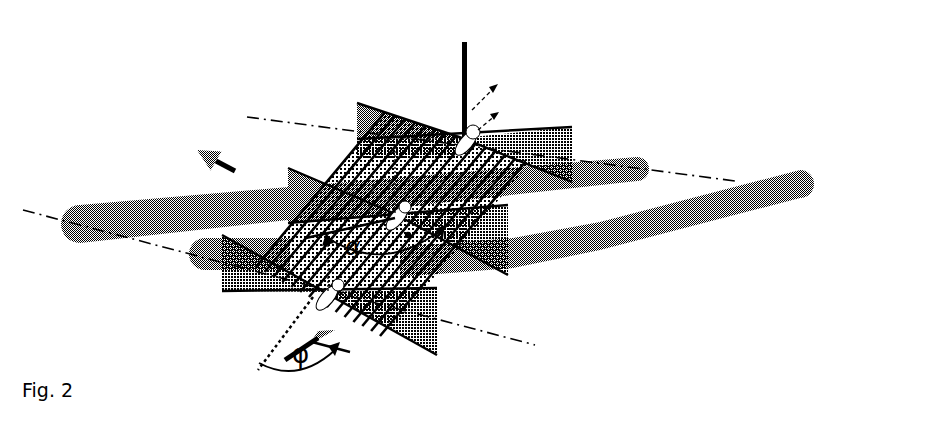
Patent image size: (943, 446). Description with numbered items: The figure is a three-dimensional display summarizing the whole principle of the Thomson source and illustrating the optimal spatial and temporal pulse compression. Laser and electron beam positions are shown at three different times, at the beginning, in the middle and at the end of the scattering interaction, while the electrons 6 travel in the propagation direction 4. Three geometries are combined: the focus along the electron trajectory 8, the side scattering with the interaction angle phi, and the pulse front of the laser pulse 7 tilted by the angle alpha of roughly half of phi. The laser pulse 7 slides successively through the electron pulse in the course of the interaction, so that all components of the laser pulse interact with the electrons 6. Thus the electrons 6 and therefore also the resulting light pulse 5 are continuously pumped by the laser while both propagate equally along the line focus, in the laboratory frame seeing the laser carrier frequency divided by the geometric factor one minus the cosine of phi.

The propagation direction 4 is at (355, 182).
The resulting light pulse 5 is at (494, 87).
The electrons 6 is at (497, 110).
The laser pulse 7 is at (501, 223).
The focus along the electron trajectory 8 is at (279, 277).